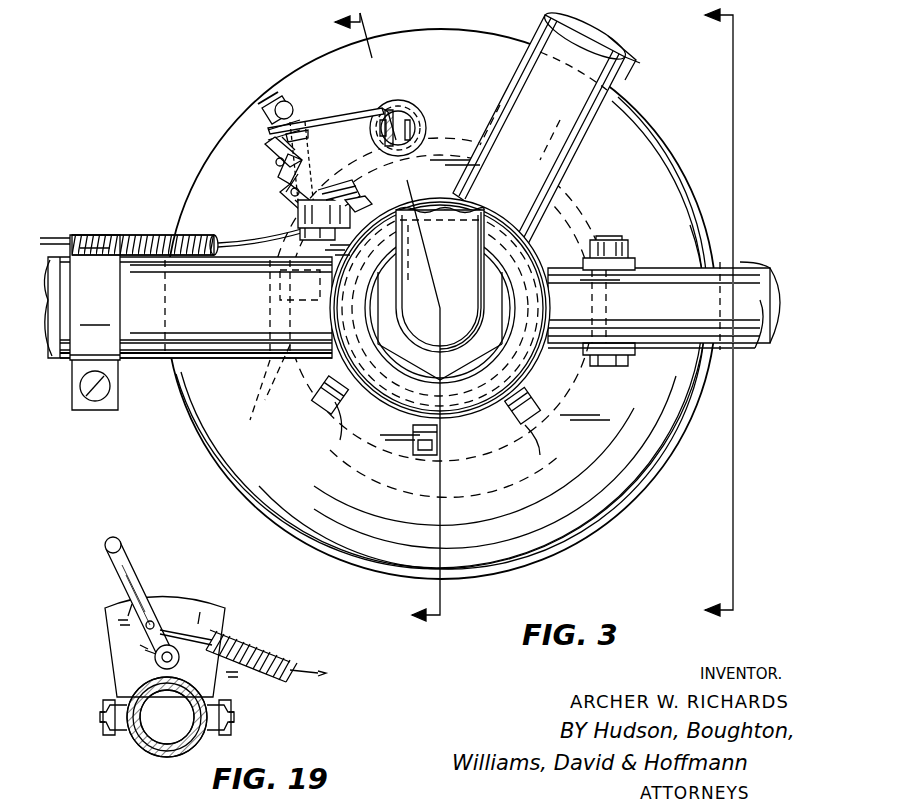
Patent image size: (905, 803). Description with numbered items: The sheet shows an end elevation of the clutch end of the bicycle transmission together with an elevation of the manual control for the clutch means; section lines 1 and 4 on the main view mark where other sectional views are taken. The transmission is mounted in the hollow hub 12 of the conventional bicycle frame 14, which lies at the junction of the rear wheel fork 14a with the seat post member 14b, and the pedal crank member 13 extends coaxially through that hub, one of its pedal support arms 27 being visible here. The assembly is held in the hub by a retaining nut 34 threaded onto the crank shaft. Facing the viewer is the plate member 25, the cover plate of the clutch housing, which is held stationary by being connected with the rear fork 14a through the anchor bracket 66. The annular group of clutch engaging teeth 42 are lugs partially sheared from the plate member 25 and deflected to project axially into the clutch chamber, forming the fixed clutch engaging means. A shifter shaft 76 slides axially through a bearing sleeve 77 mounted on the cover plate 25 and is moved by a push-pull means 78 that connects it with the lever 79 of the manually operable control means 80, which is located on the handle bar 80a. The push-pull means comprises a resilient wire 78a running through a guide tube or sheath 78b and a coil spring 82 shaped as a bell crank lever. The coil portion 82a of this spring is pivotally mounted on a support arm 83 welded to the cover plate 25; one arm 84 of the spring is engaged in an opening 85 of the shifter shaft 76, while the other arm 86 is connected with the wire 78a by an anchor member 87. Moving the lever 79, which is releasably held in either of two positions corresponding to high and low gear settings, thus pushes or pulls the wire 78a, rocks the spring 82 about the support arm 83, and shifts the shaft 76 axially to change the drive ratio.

In FIG. 3, the section line 1- 1 is at (376, 321).
In FIG. 3, the section line 4- 4 is at (707, 317).
In FIG. 3, the hollow hub 12 is at (478, 428).
In FIG. 3, the pedal crank member 13 is at (392, 310).
In FIG. 3, the bicycle frame 14 is at (570, 123).
In FIG. 3, the rear wheel fork 14a is at (745, 280).
In FIG. 3, the seat post member 14b is at (630, 73).
In FIG. 3, the plate member 25 is at (650, 452).
In FIG. 3, the pedal support arm 27 is at (470, 232).
In FIG. 3, the retaining nut 34 is at (490, 345).
In FIG. 3, the clutch engaging teeth 42 is at (395, 450).
In FIG. 3, the anchor bracket 66 is at (622, 262).
In FIG. 3, the shifter shaft 76 is at (405, 130).
In FIG. 3, the bearing sleeve 77 is at (392, 102).
In FIG. 3, the push-pull means 78 is at (186, 289).
In FIG. 19, the push-pull means 78 is at (300, 688).
In FIG. 3, the resilient wire 78a is at (233, 242).
In FIG. 19, the resilient wire 78a is at (212, 637).
In FIG. 3, the guide tube 78b is at (148, 235).
In FIG. 19, the guide tube 78b is at (262, 690).
In FIG. 19, the lever 79 is at (126, 575).
In FIG. 19, the control means 80 is at (110, 650).
In FIG. 19, the handle bar 80a is at (143, 735).
In FIG. 3, the coil spring 82 is at (270, 174).
In FIG. 3, the coil portion 82a is at (262, 152).
In FIG. 3, the support arm 83 is at (282, 102).
In FIG. 3, the arm 84 is at (336, 122).
In FIG. 3, the opening 85 is at (410, 130).
In FIG. 3, the arm 86 is at (368, 200).
In FIG. 3, the anchor member 87 is at (405, 222).